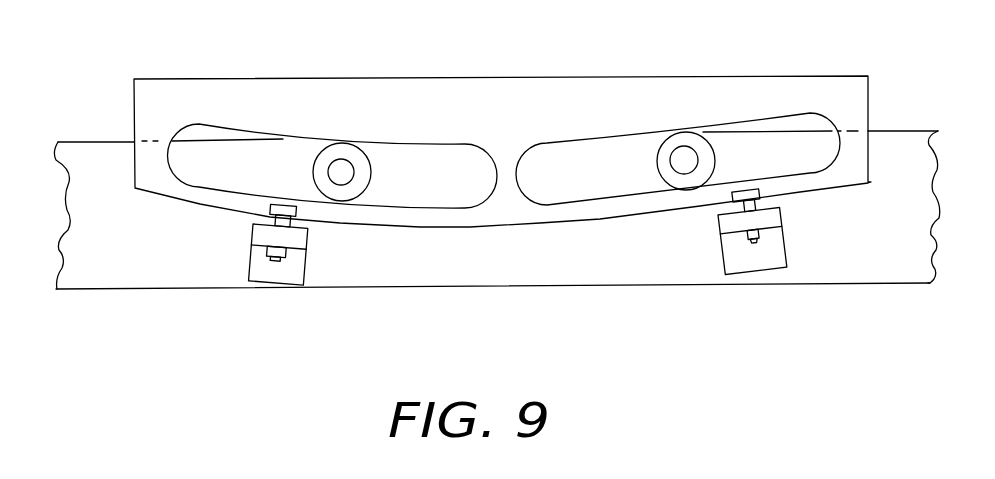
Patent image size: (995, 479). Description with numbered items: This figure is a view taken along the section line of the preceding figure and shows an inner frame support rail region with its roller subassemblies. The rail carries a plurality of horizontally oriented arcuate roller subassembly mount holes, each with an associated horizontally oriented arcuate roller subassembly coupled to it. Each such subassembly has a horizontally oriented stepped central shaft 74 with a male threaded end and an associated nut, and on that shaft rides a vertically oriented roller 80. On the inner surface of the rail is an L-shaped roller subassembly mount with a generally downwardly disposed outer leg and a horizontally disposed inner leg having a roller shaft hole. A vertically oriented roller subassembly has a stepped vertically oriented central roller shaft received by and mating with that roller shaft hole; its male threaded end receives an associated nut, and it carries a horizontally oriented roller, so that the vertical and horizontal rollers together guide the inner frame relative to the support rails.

The horizontally oriented stepped central shaft 74 is at (343, 173).
The vertically oriented roller 80 is at (358, 155).